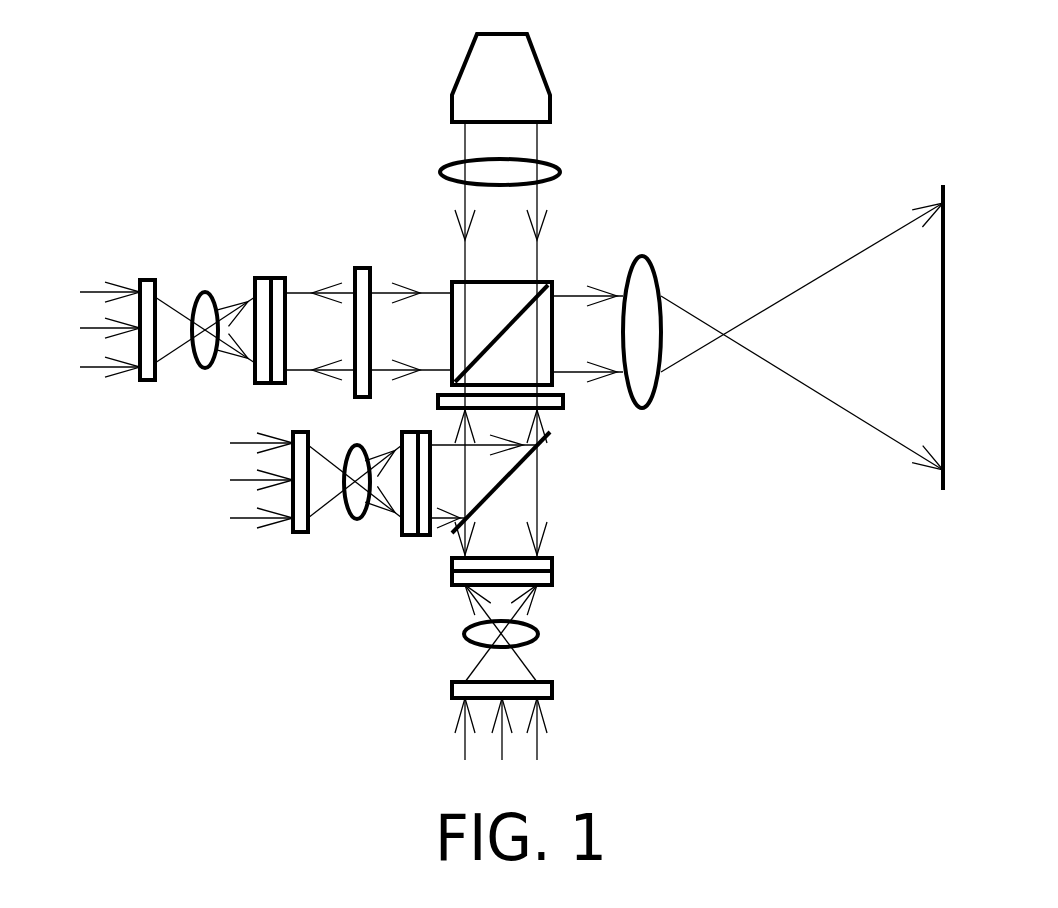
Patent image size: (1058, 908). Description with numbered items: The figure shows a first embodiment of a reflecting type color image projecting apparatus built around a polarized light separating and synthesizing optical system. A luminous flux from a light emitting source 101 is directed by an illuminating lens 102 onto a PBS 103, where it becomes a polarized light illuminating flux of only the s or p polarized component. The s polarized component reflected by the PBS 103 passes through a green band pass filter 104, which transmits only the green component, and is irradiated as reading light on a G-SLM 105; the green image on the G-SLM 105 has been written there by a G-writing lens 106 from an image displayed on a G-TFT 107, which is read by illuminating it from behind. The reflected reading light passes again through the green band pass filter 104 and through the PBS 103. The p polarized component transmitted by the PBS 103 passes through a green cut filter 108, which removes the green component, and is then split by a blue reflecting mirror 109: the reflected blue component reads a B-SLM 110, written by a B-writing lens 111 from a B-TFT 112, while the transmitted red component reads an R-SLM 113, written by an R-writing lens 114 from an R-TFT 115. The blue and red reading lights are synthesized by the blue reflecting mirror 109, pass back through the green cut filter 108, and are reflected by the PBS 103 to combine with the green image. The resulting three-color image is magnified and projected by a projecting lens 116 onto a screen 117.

The light emitting source 101 is at (543, 70).
The illuminating lens 102 is at (558, 165).
The PBS 103 is at (547, 282).
The green band pass filter (GBF) 104 is at (370, 267).
The G-SLM 105 is at (280, 278).
The G-writing lens 106 is at (208, 290).
The G-TFT 107 is at (155, 280).
The green cut filter (GCF) 108 is at (437, 410).
The blue reflecting mirror (B-reflecting mirror) 109 is at (540, 445).
The B-SLM 110 is at (410, 537).
The B-writing lens 111 is at (358, 520).
The B-TFT 112 is at (297, 533).
The R-SLM 113 is at (558, 567).
The R-writing lens 114 is at (540, 632).
The R-TFT 115 is at (558, 688).
The projecting lens 116 is at (645, 408).
The screen 117 is at (943, 490).